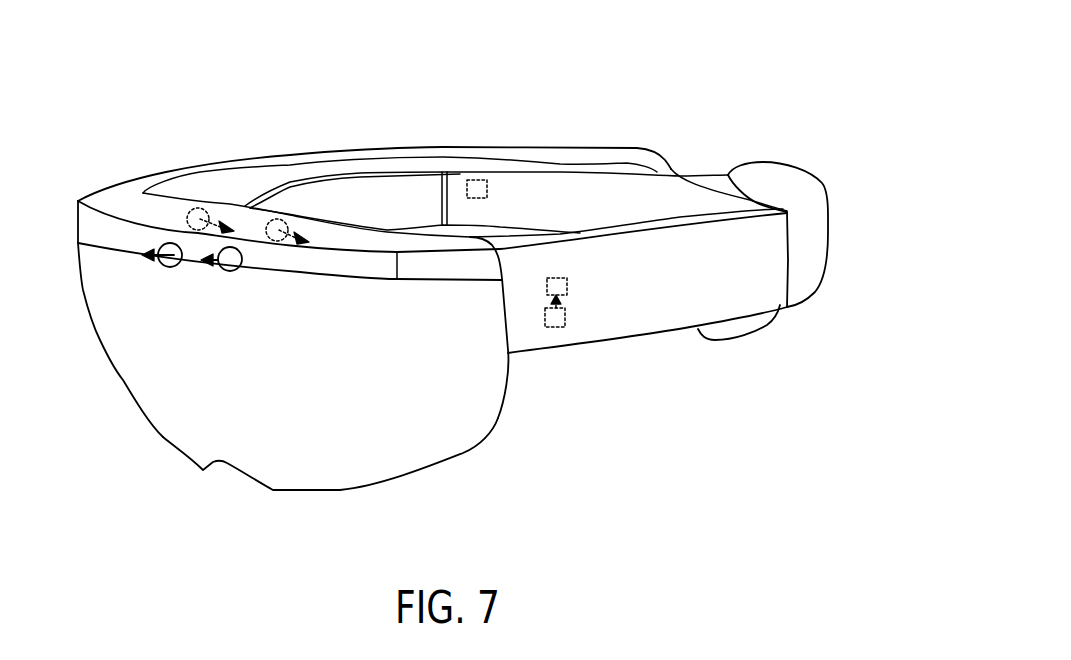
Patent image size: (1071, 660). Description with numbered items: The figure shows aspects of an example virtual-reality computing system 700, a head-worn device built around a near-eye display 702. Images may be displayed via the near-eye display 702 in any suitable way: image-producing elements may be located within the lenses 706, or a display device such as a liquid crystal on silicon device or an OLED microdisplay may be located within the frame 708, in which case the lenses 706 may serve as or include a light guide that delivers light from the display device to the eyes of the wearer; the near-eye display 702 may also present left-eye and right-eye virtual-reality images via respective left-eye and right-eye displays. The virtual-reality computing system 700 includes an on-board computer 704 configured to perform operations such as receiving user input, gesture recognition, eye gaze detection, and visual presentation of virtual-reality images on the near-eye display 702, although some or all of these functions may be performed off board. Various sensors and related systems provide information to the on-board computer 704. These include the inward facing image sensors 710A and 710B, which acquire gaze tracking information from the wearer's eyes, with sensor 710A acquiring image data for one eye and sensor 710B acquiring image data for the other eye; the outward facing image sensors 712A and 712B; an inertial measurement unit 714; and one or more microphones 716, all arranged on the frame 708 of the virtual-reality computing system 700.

The virtual-reality computing system 700 is at (655, 75).
The near-eye display 702 is at (104, 371).
The on-board computer 704 is at (557, 277).
The lenses 706 is at (167, 436).
The frame 708 is at (530, 355).
The inward facing image sensor 710A is at (277, 242).
The inward facing image sensor 710B is at (187, 217).
The outward facing image sensor 712A is at (230, 271).
The outward facing image sensor 712B is at (170, 267).
The inertial measurement unit 714 is at (567, 316).
The microphone 716 is at (477, 178).